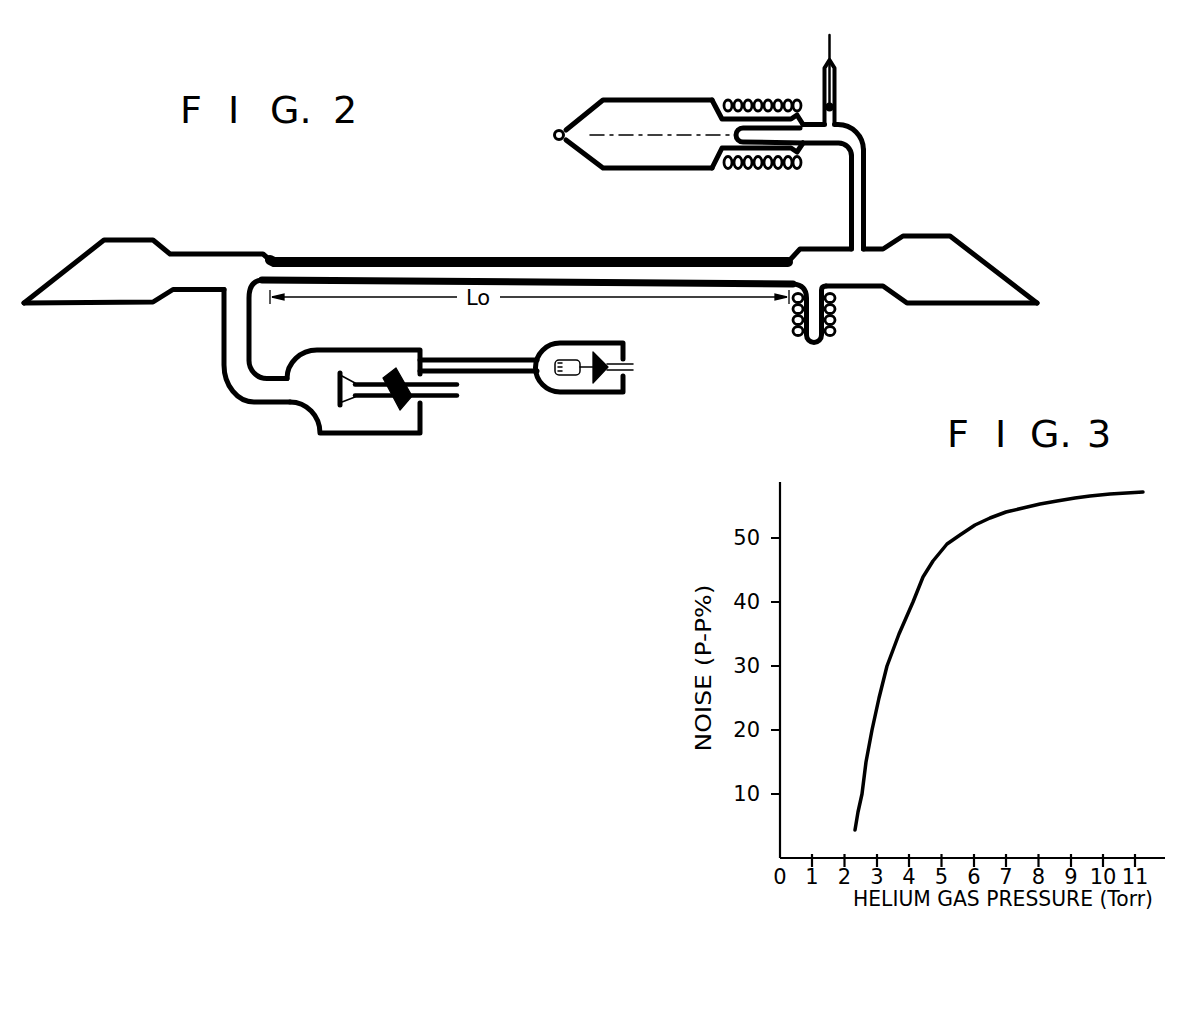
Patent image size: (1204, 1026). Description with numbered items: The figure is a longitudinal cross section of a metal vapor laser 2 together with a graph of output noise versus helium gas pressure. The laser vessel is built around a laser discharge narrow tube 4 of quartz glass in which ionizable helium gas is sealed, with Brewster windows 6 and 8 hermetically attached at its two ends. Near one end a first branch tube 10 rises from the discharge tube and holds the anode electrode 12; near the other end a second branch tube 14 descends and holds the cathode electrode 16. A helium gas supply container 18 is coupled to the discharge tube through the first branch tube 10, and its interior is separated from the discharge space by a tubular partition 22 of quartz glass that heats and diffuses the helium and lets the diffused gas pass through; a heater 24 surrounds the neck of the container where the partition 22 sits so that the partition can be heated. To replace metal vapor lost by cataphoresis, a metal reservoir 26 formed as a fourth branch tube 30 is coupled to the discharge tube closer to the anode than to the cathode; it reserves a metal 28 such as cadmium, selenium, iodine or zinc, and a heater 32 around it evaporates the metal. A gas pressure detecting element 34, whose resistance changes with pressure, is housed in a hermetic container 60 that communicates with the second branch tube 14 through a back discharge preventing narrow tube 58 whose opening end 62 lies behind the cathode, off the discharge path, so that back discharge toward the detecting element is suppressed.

The metal vapor laser 2 is at (357, 231).
The laser discharge narrow tube 4 is at (435, 258).
The Brewster window 6 is at (69, 263).
The Brewster window 8 is at (1000, 278).
The first branch tube 10 is at (866, 173).
The anode electrode 12 is at (840, 85).
The second branch tube 14 is at (266, 405).
The cathode electrode 16 is at (342, 405).
The helium gas supply container 18 is at (698, 98).
The tubular partition 22 is at (778, 100).
The heater 24 is at (736, 100).
The metal reservoir 26 is at (836, 296).
The metal 28 is at (810, 340).
The fourth branch tube 30 is at (824, 341).
The heater 32 is at (836, 318).
The gas pressure detecting element 34 is at (572, 359).
The back discharge preventing narrow tube 58 is at (494, 357).
The hermetic container 60 is at (611, 341).
The opening end 62 is at (413, 358).